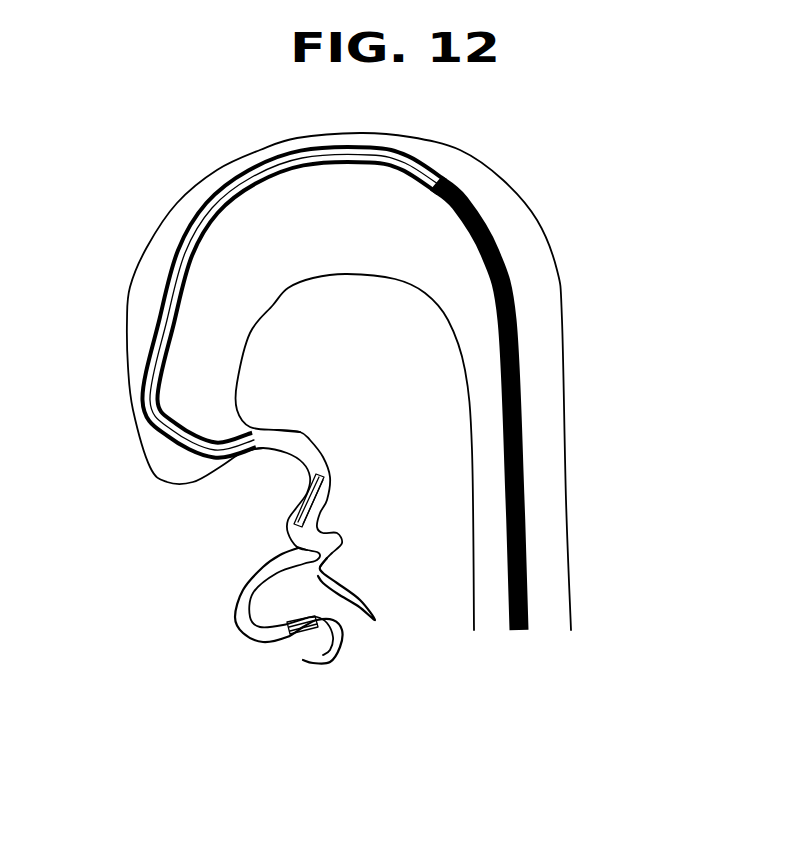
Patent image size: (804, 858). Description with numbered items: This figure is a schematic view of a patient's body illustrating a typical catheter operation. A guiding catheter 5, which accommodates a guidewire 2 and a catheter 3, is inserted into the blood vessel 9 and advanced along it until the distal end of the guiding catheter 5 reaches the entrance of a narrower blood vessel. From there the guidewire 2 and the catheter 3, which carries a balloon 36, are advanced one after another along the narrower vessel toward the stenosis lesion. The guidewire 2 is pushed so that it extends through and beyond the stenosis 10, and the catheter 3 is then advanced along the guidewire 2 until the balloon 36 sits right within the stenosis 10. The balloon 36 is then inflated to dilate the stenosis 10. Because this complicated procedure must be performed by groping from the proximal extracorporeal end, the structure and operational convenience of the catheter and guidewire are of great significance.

The guidewire 2 is at (235, 614).
The catheter 3 is at (293, 427).
The guiding catheter 5 is at (187, 430).
The blood vessel 9 is at (540, 362).
The balloon 36 is at (320, 500).
The stenosis 10 is at (303, 633).